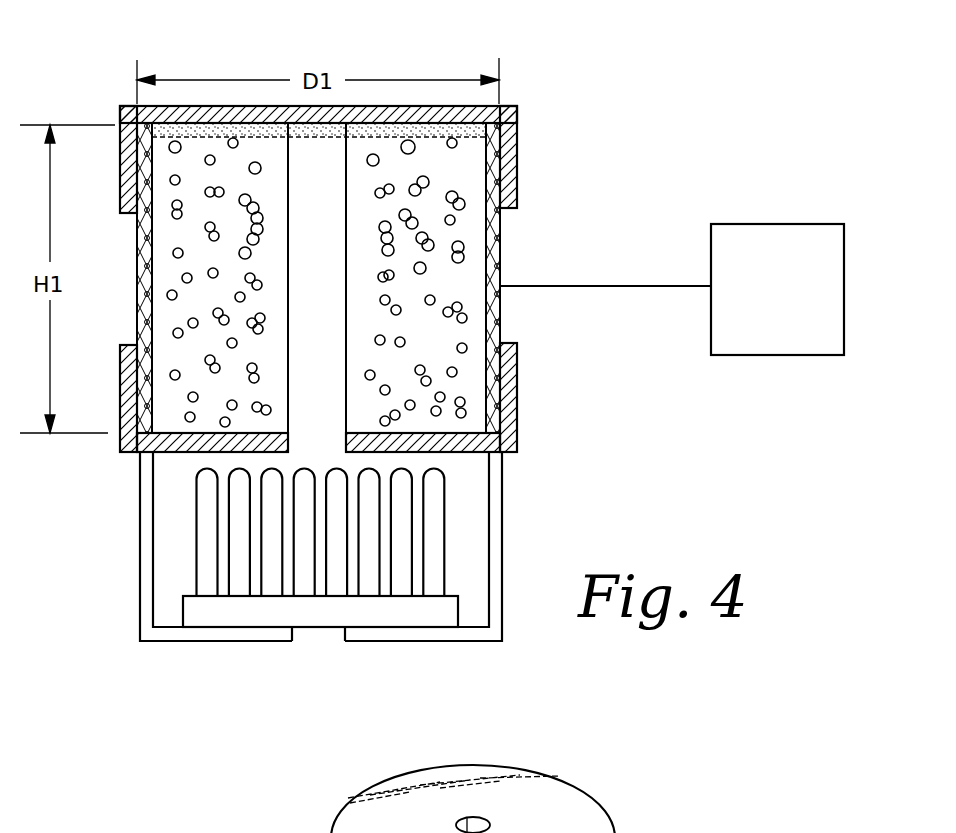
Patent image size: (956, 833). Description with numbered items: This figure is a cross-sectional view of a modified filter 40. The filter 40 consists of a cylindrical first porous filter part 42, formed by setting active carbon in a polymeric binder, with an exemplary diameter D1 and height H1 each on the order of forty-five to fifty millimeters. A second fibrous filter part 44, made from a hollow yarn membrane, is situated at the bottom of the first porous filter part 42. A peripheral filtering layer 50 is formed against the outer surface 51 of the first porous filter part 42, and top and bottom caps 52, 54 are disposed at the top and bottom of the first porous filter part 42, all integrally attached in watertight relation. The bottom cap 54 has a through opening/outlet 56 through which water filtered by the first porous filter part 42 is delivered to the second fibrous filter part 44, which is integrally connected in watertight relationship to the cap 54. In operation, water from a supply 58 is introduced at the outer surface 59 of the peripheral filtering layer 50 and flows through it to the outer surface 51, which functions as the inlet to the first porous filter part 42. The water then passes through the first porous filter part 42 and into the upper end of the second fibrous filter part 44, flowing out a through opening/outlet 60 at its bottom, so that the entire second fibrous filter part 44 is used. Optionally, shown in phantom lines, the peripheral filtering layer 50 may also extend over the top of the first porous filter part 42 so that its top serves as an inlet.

The filter 40 is at (318, 680).
The first porous filter part 42 is at (463, 277).
The second fibrous filter part 44 is at (445, 510).
The peripheral filtering layer 50 is at (428, 100).
The outer surface of the first porous filter part 51 is at (500, 232).
The top cap 52 is at (517, 137).
The bottom cap 54 is at (517, 410).
The through opening/outlet 56 is at (300, 441).
The supply 58 is at (672, 289).
The outer surface of the peripheral filtering layer 59 is at (500, 250).
The through opening/outlet 60 is at (310, 636).